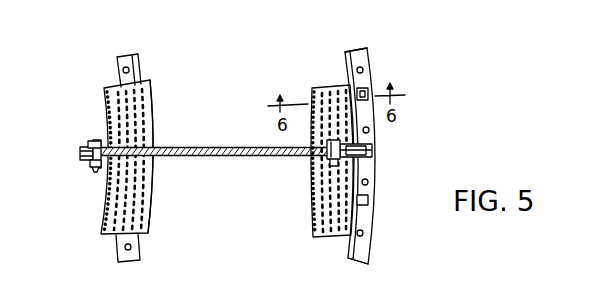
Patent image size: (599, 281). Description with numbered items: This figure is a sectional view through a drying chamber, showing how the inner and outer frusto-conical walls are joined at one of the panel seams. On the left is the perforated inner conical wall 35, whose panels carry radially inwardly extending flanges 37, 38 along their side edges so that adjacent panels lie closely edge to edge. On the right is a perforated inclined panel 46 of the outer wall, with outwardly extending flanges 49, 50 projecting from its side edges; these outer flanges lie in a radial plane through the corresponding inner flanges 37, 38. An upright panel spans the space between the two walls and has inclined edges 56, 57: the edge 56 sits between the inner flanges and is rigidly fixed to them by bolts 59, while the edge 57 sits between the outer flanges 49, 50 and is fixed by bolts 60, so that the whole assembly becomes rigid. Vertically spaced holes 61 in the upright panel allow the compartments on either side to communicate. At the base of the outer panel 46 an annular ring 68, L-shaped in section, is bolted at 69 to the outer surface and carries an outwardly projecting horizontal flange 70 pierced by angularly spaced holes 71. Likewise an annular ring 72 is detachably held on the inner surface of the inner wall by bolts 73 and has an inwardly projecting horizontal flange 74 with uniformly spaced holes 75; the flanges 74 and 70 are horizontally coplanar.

The internal conical-shaped wall 35 is at (142, 83).
The radially inwardly extending flange 37 is at (104, 142).
The radially inwardly extending flange 38 is at (100, 170).
The perforated inclined panel 46 is at (332, 88).
The outwardly extending flange 49 is at (373, 144).
The outwardly extending flange 50 is at (368, 160).
The inclined edge 56 is at (82, 153).
The inclined edge 57 is at (373, 150).
The bolt 59 is at (92, 145).
The bolt 60 is at (340, 137).
The vertically spaced hole 61 is at (267, 150).
The annular ring 68 is at (366, 52).
The bolt 69 is at (369, 93).
The outwardly projecting horizontal flange 70 is at (360, 243).
The hole 71 is at (369, 65).
The annular ring 72 is at (143, 52).
The bolt 73 is at (155, 113).
The inwardly projecting horizontal flange 74 is at (121, 58).
The hole 75 is at (122, 70).